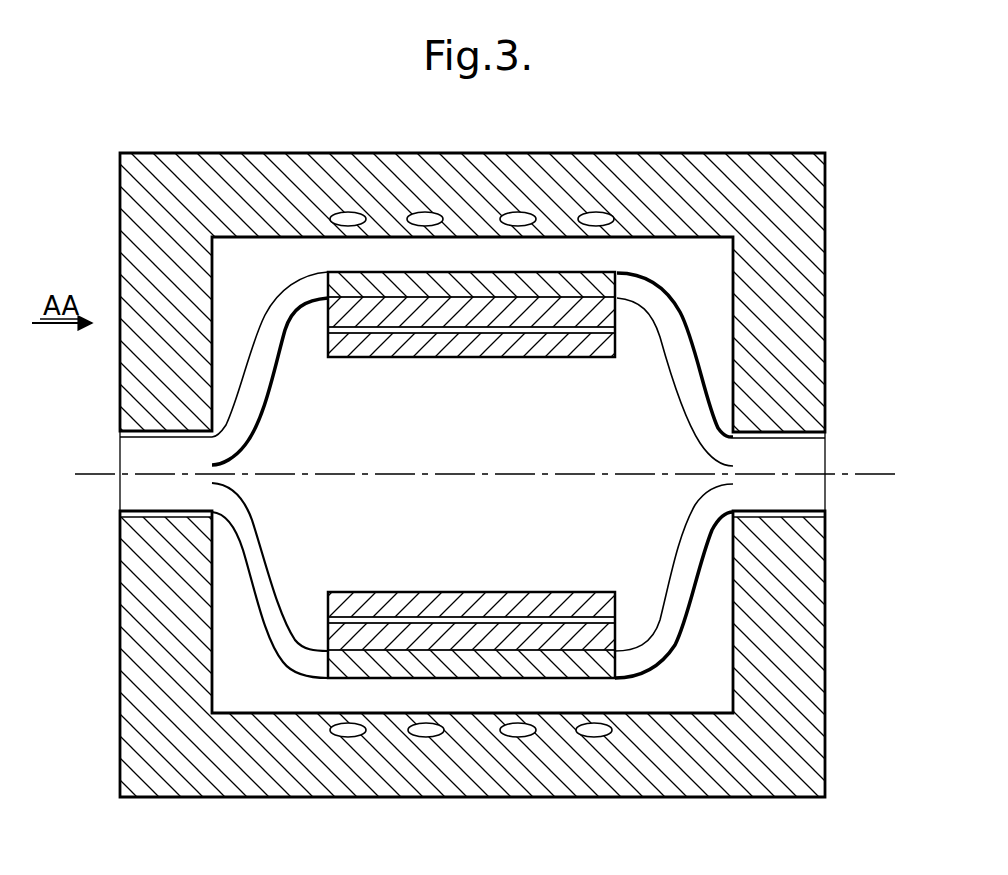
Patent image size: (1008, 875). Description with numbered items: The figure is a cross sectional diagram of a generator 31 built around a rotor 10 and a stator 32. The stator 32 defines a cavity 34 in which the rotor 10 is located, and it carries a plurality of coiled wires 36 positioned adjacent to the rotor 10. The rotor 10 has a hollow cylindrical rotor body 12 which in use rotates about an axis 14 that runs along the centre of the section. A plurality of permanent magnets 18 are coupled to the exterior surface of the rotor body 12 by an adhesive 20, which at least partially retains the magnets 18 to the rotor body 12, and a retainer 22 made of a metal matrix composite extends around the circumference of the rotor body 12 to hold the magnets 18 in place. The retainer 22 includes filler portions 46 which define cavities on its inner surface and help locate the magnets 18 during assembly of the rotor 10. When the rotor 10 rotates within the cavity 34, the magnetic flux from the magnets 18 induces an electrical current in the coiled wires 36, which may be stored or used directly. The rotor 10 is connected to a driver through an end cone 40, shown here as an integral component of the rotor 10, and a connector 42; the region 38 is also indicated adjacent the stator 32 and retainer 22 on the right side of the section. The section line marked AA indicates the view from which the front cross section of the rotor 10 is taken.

The rotor 10 is at (624, 371).
The rotor body 12 is at (487, 345).
The axis 14 is at (858, 480).
The magnets 18 is at (567, 315).
The adhesive 20 is at (435, 330).
The retainer 22 is at (383, 290).
The generator 31 is at (237, 114).
The stator 32 is at (760, 160).
The cavity 34 is at (718, 263).
The coiled wires 36 is at (425, 218).
The pressure chamber 38 is at (718, 354).
The end cone 40 is at (673, 630).
The connector 42 is at (808, 444).
The filler portions 46 is at (660, 295).